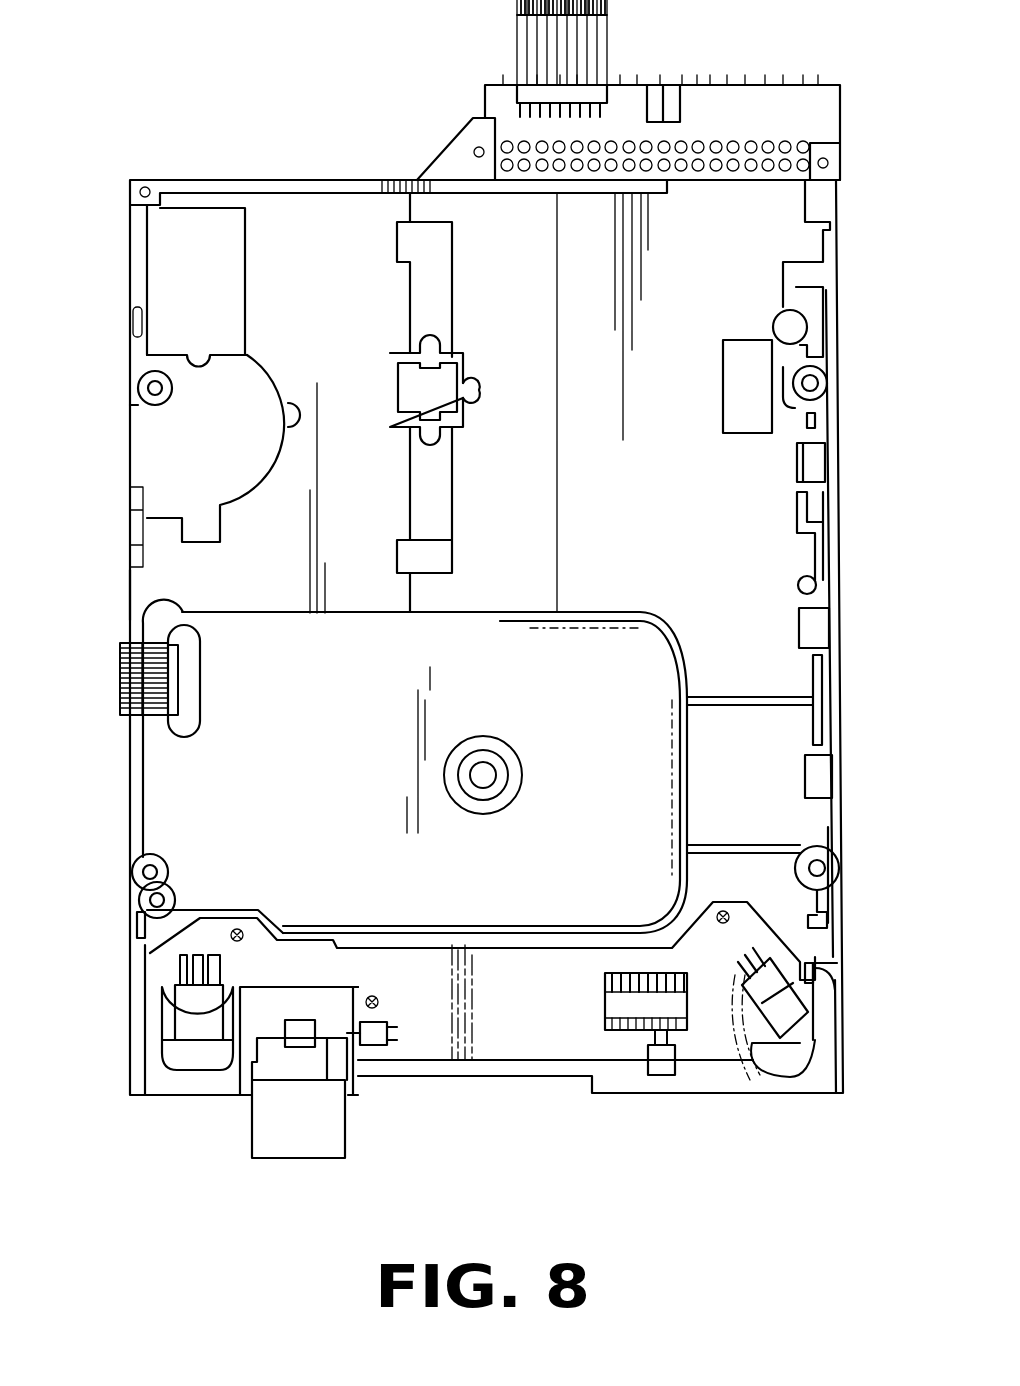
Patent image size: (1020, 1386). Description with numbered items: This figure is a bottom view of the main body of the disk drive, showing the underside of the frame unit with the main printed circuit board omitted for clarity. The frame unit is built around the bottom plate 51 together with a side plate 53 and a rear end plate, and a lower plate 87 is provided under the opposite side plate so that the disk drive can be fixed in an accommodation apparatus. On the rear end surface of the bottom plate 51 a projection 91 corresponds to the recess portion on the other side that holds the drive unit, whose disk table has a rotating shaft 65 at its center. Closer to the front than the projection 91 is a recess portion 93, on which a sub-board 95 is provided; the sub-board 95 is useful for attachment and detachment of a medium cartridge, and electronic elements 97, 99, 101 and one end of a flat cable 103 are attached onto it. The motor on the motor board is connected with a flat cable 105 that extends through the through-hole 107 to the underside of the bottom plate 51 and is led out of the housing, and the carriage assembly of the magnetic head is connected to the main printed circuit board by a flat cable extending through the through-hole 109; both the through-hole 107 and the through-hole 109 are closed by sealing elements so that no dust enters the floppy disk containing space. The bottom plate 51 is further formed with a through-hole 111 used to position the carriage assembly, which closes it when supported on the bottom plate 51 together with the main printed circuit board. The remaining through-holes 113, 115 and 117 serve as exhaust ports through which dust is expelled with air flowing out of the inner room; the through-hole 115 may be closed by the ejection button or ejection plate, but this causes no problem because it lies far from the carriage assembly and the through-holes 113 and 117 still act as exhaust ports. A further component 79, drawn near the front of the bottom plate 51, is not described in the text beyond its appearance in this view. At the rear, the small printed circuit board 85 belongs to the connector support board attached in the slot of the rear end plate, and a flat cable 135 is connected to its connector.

The bottom plate 51 is at (661, 486).
The side plate 53 is at (128, 592).
The rotating shaft 65 is at (495, 763).
The motor 79 is at (320, 1158).
The small printed circuit board 85 is at (832, 85).
The lower plate 87 is at (842, 623).
The projection 91 is at (398, 699).
The recess portion 93 is at (797, 905).
The sub-board 95 is at (483, 1060).
The electronic element 97 is at (790, 1005).
The electronic element 99 is at (198, 1042).
The electronic element 101 is at (662, 1075).
The flat cable 103 is at (610, 1030).
The flat cable 105 is at (123, 717).
The through-hole 107 is at (182, 737).
The through-hole 109 is at (760, 433).
The through-hole 111 is at (447, 368).
The through-hole 113 is at (793, 1077).
The through-hole 115 is at (243, 1070).
The through-hole 117 is at (173, 1073).
The flat cable 135 is at (607, 32).